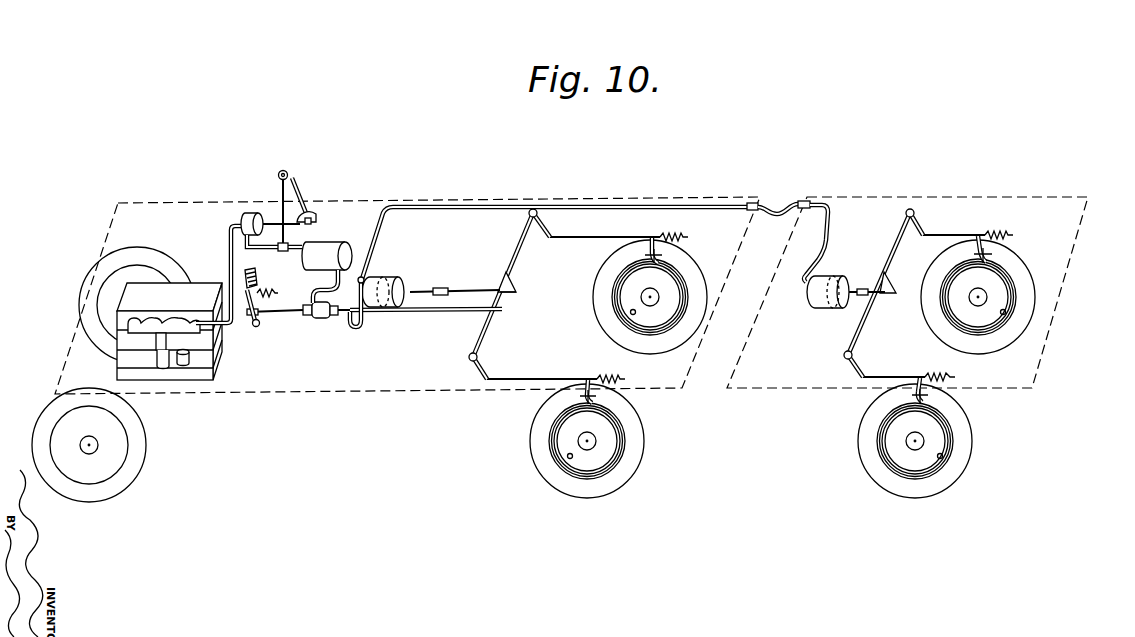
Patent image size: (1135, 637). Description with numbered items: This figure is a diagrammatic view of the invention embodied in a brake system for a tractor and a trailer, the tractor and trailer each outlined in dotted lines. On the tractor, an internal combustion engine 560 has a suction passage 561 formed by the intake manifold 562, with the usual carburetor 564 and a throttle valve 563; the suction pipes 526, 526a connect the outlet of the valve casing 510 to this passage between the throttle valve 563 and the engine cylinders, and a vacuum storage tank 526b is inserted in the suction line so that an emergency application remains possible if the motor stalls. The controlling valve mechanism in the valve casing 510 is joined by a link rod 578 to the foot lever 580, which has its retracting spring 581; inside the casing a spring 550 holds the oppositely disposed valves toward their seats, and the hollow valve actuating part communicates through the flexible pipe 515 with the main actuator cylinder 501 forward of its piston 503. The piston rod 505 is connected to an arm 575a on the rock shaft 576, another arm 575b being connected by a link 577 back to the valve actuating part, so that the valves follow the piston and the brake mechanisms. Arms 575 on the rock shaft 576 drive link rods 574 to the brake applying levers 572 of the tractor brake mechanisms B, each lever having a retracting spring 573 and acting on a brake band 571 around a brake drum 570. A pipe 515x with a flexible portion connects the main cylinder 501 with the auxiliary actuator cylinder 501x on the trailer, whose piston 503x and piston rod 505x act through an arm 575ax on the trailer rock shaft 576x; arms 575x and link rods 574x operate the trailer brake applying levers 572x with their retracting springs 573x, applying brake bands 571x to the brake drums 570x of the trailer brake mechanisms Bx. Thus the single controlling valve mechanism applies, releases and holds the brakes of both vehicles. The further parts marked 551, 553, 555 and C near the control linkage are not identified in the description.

The cylinder 501 is at (406, 290).
The piston 503 is at (383, 284).
The piston rod 505 is at (430, 290).
The valve casing 510 is at (328, 318).
The flexible pipe 515 is at (364, 318).
The pipe 515x is at (668, 205).
The suction pipe 526 is at (229, 231).
The suction pipe 526a is at (322, 290).
The vacuum storage tank 526b is at (327, 256).
The spring 550 is at (311, 222).
The hand lever 551 is at (299, 186).
The quadrant 553 is at (313, 210).
The knob 555 is at (278, 176).
The internal combustion engine 560 is at (137, 290).
The suction passage 561 is at (150, 338).
The intake manifold 562 is at (130, 323).
The throttle valve 563 is at (161, 368).
The carburetor 564 is at (184, 365).
The brake drum 570 is at (620, 312).
The brake band 571 is at (690, 296).
The brake applying lever 572 is at (660, 254).
The retracting spring 573 is at (668, 237).
The link rod 574 is at (608, 232).
The arm 575 is at (538, 216).
The arm 575a is at (516, 276).
The arm 575b is at (516, 291).
The rock shaft 576 is at (522, 248).
The link 577 is at (441, 312).
The link rod 578 is at (290, 313).
The foot lever 580 is at (256, 328).
The retracting spring 581 is at (259, 291).
The auxiliary actuator cylinder 501x is at (810, 292).
The piston 503x is at (833, 283).
The piston rod 505x is at (858, 298).
The brake drum 570x is at (1010, 312).
The brake band 571x is at (1020, 294).
The brake applying lever 572x is at (998, 254).
The retracting spring 573x is at (1010, 237).
The link rod 574x is at (978, 235).
The arm 575x is at (915, 215).
The arm 575ax is at (893, 297).
The rock shaft 576x is at (895, 247).
The brake mechanisms B is at (369, 371).
The brake mechanisms Bx is at (931, 369).
The control cylinder C is at (263, 221).